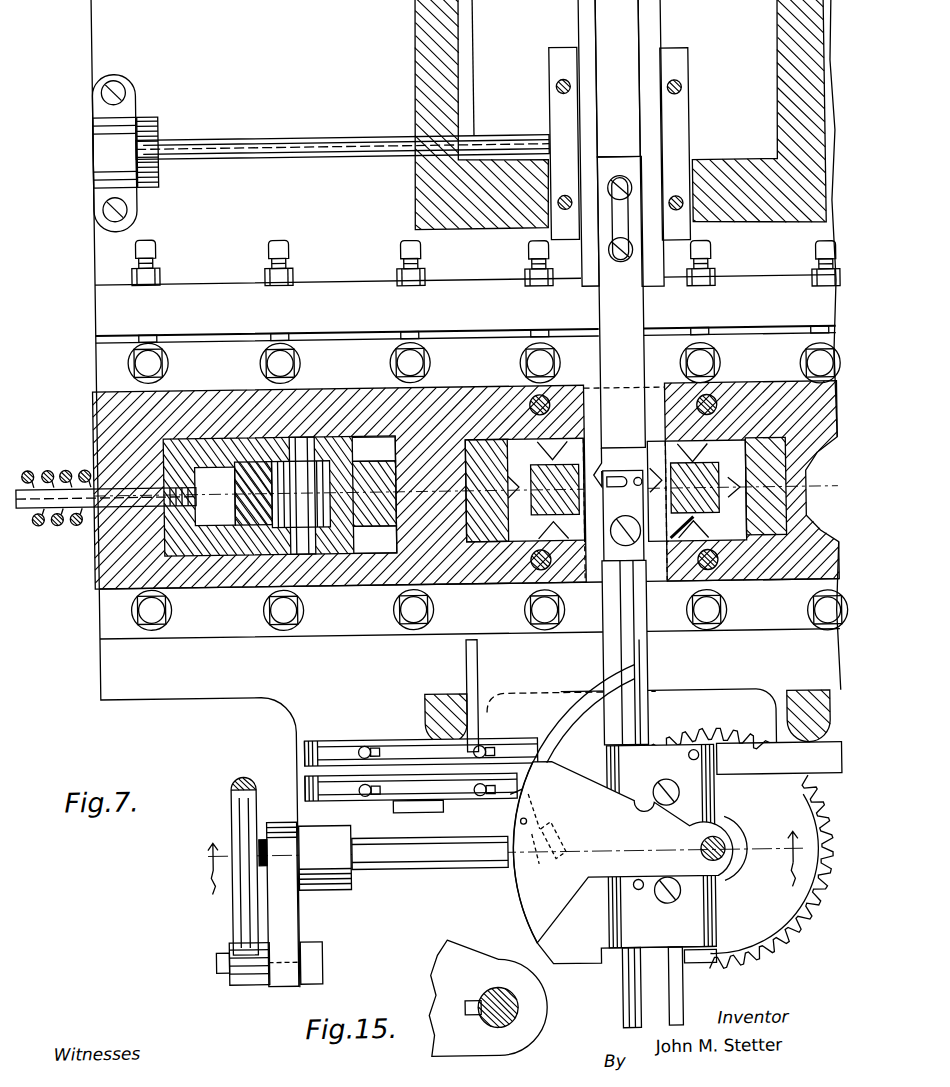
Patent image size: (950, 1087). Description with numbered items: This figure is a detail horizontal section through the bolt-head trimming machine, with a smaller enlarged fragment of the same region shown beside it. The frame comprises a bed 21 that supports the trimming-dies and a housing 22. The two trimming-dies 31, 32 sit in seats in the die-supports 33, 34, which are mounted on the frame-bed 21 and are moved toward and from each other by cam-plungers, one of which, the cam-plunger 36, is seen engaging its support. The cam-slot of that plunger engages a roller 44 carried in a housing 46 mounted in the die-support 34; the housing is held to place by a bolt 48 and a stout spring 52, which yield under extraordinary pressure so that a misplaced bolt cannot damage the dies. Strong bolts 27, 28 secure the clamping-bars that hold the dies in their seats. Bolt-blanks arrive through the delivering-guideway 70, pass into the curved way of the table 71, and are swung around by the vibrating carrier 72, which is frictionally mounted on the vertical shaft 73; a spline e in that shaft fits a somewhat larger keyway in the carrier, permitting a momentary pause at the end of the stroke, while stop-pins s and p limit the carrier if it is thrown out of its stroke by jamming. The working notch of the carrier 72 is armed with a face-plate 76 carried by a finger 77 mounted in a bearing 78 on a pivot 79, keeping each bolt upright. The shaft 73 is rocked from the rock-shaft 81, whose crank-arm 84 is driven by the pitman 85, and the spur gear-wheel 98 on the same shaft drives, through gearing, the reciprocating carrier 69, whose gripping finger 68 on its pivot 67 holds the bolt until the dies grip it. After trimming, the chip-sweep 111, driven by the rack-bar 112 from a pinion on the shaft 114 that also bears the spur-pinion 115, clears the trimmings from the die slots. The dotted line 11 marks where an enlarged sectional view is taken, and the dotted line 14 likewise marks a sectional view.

In FIG. 7, the bed 21 is at (118, 26).
In FIG. 7, the housing 22 is at (427, 98).
In FIG. 7, the rack-bar 112 is at (636, 55).
In FIG. 7, the shaft 114 is at (282, 145).
In FIG. 7, the spur-pinion 115 is at (160, 128).
In FIG. 7, the chip-sweep 111 is at (617, 321).
In FIG. 7, the die-support 33 is at (783, 388).
In FIG. 7, the die-support 34 is at (96, 406).
In FIG. 7, the bolt 28 is at (550, 404).
In FIG. 7, the bolt 27 is at (715, 406).
In FIG. 7, the housing 46 is at (216, 446).
In FIG. 7, the cam-plunger 36 is at (376, 468).
In FIG. 7, the roller 44 is at (301, 496).
In FIG. 7, the trimming-die 32 is at (512, 516).
In FIG. 7, the trimming-die 31 is at (738, 464).
In FIG. 7, the dotted lines 14 14 is at (58, 470).
In FIG. 7, the bolt 48 is at (33, 500).
In FIG. 7, the spring 52 is at (79, 526).
In FIG. 7, the gripping and holding finger 68 is at (613, 480).
In FIG. 7, the pivot 67 is at (644, 486).
In FIG. 7, the reciprocating carrier 69 is at (672, 654).
In FIG. 7, the table 71 is at (470, 670).
In FIG. 7, the delivering-guideway 70 is at (328, 784).
In FIG. 7, the face-plate 76 is at (543, 770).
In FIG. 7, the finger 77 is at (510, 802).
In FIG. 7, the bearing 78 is at (546, 840).
In FIG. 7, the pivot 79 is at (540, 848).
In FIG. 7, the vibrating carrier 72 is at (630, 854).
In FIG. 15, the vibrating carrier 72 is at (440, 964).
In FIG. 7, the vertical shaft 73 is at (720, 842).
In FIG. 15, the vertical shaft 73 is at (515, 1010).
In FIG. 7, the pitman 85 is at (244, 811).
In FIG. 7, the crank-arm 84 is at (332, 888).
In FIG. 7, the rock-shaft 81 is at (437, 872).
In FIG. 7, the spur gear-wheel 98 is at (792, 936).
In FIG. 7, the dotted lines 11 11 is at (501, 862).
In FIG. 7, the stop-pin p is at (686, 756).
In FIG. 7, the stop-pin s is at (636, 898).
In FIG. 7, the spline e is at (696, 846).
In FIG. 15, the spline e is at (476, 1002).